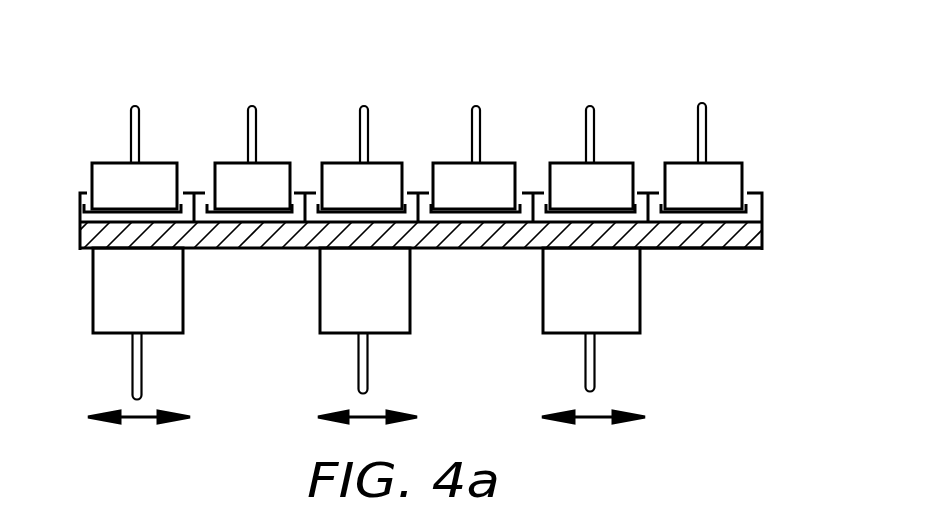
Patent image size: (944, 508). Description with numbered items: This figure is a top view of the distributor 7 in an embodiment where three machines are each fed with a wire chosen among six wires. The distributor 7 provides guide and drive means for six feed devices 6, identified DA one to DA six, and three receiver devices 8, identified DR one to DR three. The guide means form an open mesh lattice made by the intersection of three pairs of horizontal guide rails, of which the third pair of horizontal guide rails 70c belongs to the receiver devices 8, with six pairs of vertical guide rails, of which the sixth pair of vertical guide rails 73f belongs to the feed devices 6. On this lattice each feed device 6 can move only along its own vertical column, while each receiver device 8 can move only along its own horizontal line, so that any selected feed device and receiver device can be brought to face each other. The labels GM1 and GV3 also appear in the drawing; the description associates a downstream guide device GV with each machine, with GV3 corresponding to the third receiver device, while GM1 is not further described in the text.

The guide member of actuator DA1 GM1 is at (130, 147).
The feed device 6 is at (227, 158).
The vertical guide rail 73f is at (655, 192).
The distributor 7 is at (80, 233).
The receiver device 8 is at (320, 300).
The guide rod of drive DR3 GV3 is at (130, 352).
The horizontal guide rail 70c is at (737, 235).